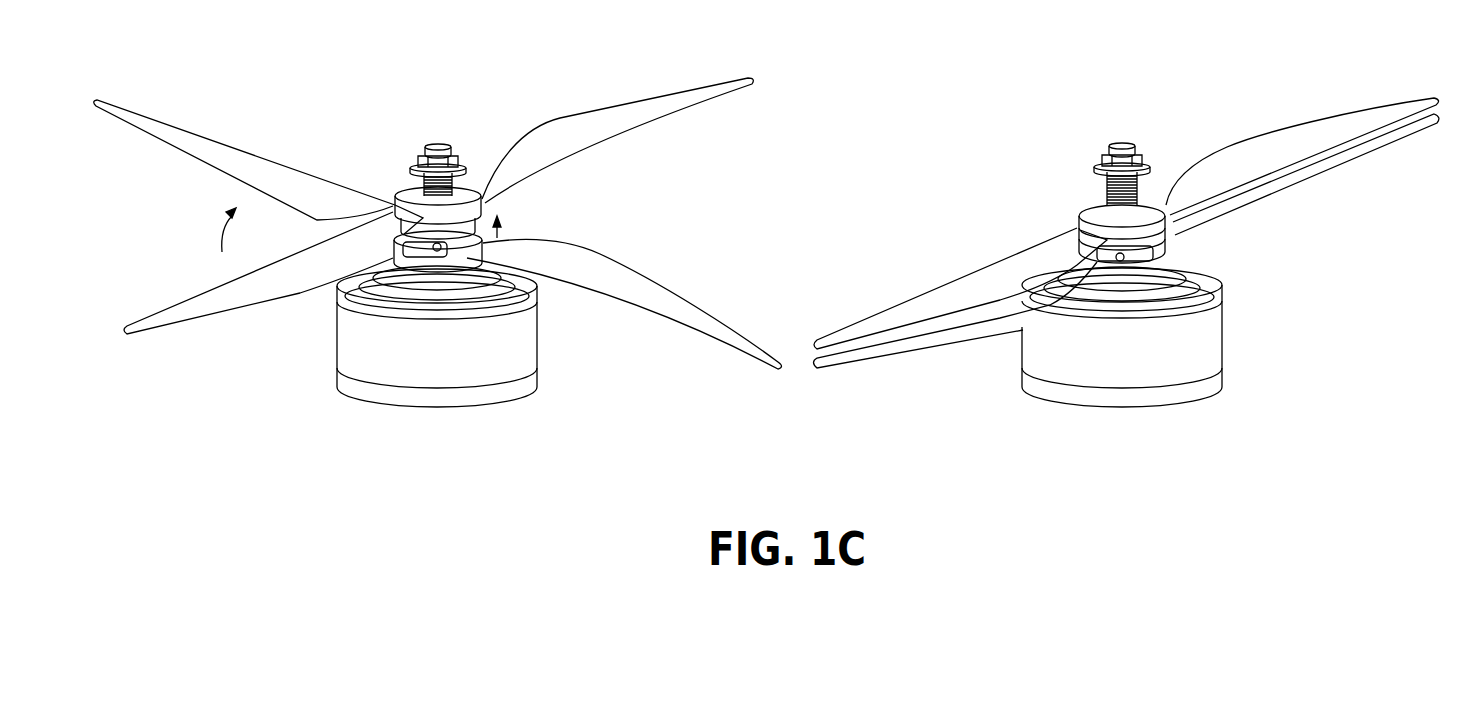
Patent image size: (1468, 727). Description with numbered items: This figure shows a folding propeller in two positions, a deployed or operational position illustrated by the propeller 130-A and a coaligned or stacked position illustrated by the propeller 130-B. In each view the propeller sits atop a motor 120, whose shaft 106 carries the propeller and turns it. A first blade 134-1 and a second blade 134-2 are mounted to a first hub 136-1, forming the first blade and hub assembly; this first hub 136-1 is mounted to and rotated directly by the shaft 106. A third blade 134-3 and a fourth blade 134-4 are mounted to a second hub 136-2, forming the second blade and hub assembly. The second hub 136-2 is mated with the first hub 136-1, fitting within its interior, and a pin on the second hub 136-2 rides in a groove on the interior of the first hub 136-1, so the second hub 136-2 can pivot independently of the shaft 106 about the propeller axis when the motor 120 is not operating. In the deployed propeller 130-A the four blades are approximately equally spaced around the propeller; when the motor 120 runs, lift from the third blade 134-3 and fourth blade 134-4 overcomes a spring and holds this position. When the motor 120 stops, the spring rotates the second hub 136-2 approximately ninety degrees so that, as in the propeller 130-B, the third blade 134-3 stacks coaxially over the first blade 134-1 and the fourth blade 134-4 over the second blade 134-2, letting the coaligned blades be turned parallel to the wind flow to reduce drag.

The shaft 106 is at (437, 150).
The motor 120 is at (524, 345).
The propeller in deployed position 130-A is at (455, 92).
The propeller in coaligned position 130-B is at (1140, 92).
The first blade 134-1 is at (622, 275).
The second blade 134-2 is at (218, 157).
The third blade 134-3 is at (585, 147).
The fourth blade 134-4 is at (230, 305).
The first hub 136-1 is at (447, 262).
The second hub 136-2 is at (465, 198).